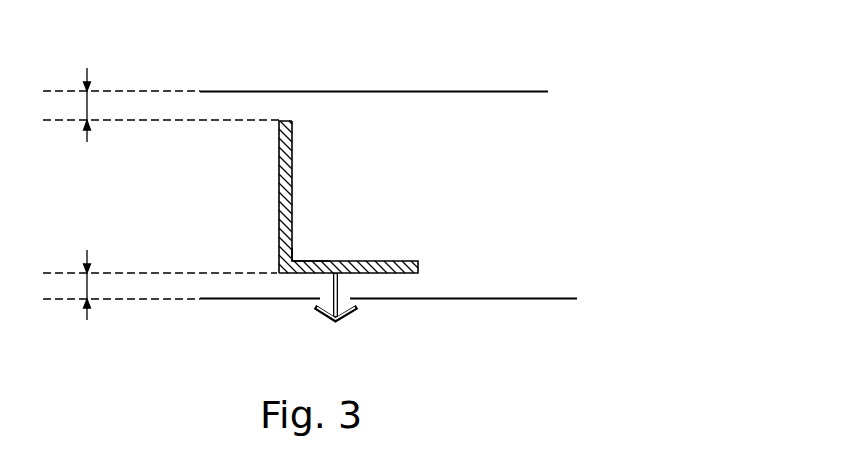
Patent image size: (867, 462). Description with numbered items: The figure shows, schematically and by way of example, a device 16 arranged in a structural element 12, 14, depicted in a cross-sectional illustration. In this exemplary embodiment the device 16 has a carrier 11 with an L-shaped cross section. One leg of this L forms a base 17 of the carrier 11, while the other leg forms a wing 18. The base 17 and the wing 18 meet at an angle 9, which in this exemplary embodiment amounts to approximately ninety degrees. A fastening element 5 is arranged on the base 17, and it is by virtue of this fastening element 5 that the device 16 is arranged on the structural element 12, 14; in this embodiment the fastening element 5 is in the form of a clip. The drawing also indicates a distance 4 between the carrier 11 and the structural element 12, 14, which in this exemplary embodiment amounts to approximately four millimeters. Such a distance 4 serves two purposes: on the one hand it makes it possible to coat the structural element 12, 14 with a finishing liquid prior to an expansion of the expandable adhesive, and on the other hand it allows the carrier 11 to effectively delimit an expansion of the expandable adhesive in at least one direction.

The distance 4 is at (76, 194).
The fastening element 5 is at (347, 312).
The angle 9 is at (318, 261).
The carrier 11 is at (297, 163).
The structural element 12 is at (485, 92).
The structural element 14 is at (541, 299).
The device 16 is at (296, 197).
The base 17 is at (400, 260).
The wing 18 is at (290, 130).